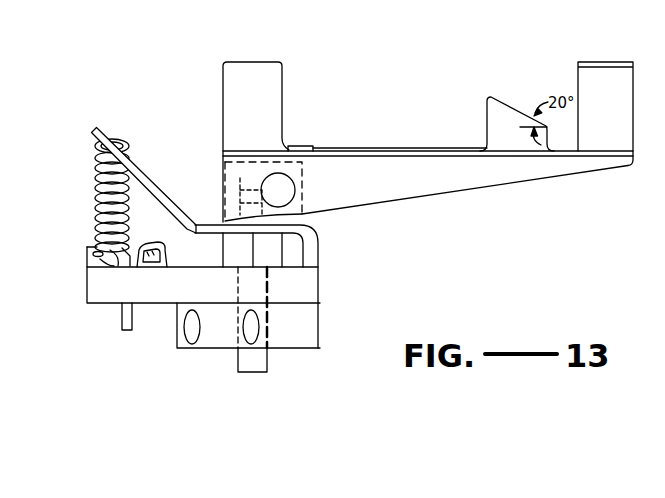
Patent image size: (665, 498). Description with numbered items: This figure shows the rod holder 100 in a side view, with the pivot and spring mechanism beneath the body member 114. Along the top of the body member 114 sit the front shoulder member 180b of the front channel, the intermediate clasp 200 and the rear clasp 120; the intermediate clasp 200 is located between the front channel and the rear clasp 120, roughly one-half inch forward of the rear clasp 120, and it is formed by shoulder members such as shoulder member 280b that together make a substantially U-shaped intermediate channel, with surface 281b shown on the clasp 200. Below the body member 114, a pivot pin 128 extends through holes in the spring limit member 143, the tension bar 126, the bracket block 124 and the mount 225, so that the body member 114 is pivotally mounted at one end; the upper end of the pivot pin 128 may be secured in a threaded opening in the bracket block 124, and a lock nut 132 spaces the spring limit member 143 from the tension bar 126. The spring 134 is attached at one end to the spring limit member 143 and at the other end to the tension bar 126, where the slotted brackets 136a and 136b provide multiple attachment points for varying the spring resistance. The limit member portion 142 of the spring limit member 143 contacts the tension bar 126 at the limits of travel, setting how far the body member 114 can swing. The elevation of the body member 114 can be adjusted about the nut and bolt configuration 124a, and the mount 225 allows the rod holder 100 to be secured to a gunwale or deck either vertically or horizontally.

The rod holder 100 is at (406, 84).
The body member 114 is at (380, 183).
The rear clasp 120 is at (615, 62).
The bracket block 124 is at (240, 164).
The nut and bolt configuration 124a is at (283, 190).
The tension bar 126 is at (150, 293).
The pivot pin 128 is at (247, 162).
The lock nut 132 is at (304, 268).
The spring 134 is at (97, 165).
The slotted bracket 136a is at (148, 258).
The slotted bracket 136b is at (103, 255).
The limit member portion 142 is at (295, 245).
The spring limit member 143 is at (138, 175).
The front shoulder member 180b is at (232, 77).
The intermediate clasp 200 is at (499, 110).
The mount 225 is at (308, 332).
The shoulder member 280b is at (505, 137).
The plate surface 281b is at (490, 96).